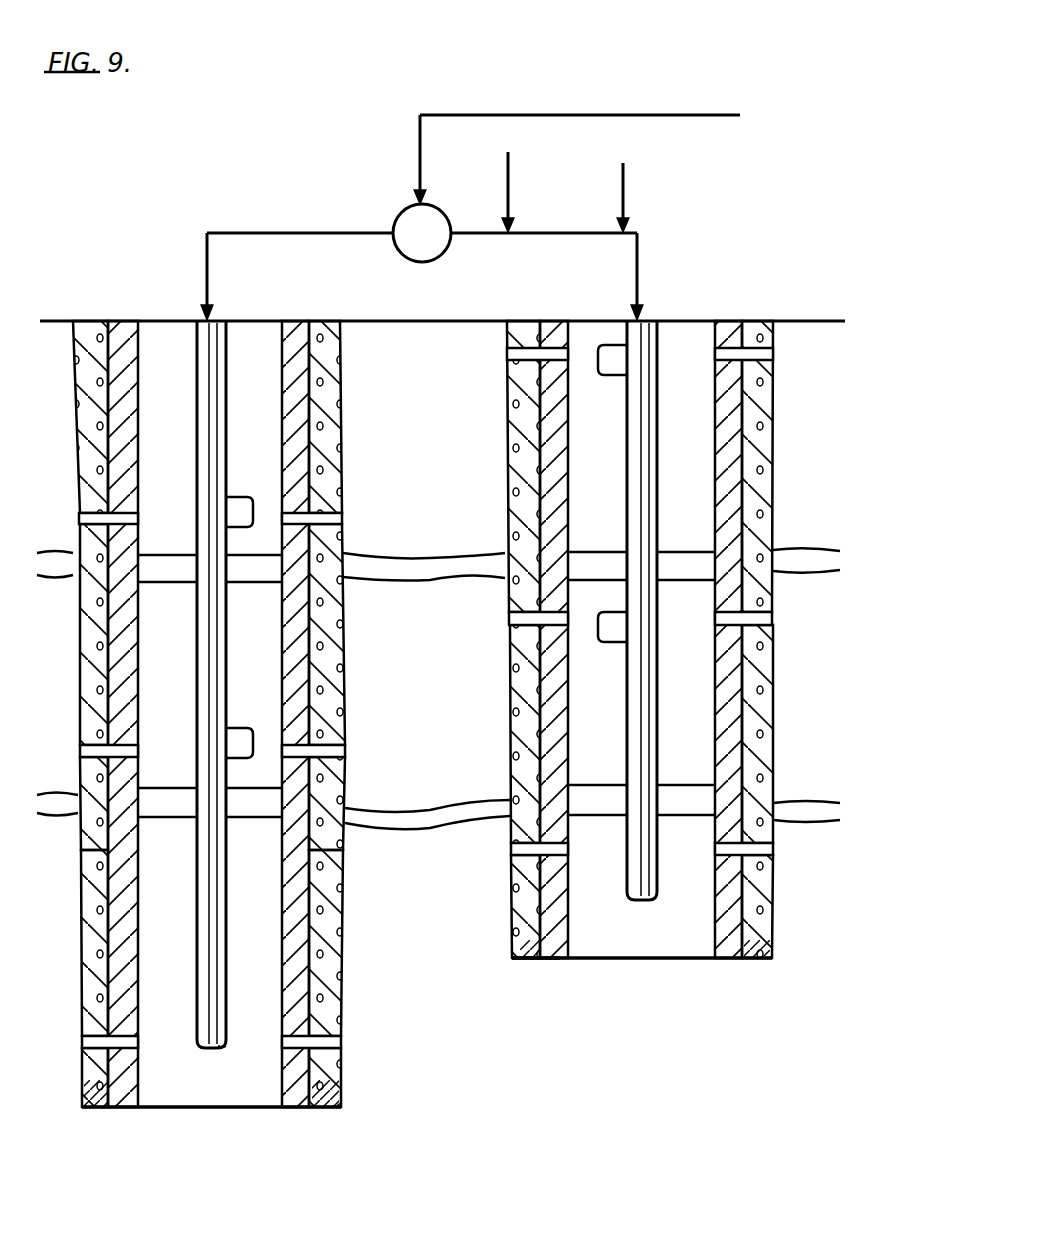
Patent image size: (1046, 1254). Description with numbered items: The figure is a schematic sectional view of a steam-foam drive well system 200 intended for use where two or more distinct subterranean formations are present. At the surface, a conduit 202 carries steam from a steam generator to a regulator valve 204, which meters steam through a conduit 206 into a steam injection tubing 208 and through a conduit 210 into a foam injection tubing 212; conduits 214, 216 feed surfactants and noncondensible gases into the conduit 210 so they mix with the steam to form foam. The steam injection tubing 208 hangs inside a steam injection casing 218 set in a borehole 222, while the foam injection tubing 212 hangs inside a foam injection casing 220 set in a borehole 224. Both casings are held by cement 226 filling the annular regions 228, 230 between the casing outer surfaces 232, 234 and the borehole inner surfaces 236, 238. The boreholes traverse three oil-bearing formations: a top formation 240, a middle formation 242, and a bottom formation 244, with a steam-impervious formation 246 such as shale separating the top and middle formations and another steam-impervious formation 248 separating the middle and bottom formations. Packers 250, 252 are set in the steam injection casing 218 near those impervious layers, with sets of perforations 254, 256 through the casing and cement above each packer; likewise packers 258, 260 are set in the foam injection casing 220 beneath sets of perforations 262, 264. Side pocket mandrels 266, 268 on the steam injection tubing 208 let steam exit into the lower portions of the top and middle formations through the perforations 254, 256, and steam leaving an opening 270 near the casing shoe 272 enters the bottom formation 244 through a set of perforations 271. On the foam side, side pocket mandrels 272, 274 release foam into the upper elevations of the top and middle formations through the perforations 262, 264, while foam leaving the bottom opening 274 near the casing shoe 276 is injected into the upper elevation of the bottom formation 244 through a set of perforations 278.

The steam-foam drive well system 200 is at (256, 162).
The conduit 202 is at (548, 116).
The regulator valve 204 is at (405, 210).
The conduit 206 is at (268, 233).
The steam injection tubing 208 is at (197, 333).
The conduit 210 is at (637, 272).
The foam injection tubing 212 is at (627, 332).
The conduit 214 is at (508, 175).
The conduit 216 is at (623, 190).
The steam injection casing 218 is at (300, 395).
The foam injection casing 220 is at (550, 435).
The borehole 222 is at (343, 490).
The borehole 224 is at (510, 652).
The cement 226 is at (318, 712).
The annular region 228 is at (343, 780).
The annular region 230 is at (520, 866).
The outer surface 232 is at (343, 910).
The outer surface 234 is at (518, 908).
The inner surface 236 is at (340, 1020).
The inner surface 238 is at (770, 928).
The top subterranean oil-bearing formation 240 is at (840, 445).
The middle subterranean oil-bearing formation 242 is at (845, 695).
The bottom subterranean oil-bearing formation 244 is at (540, 1094).
The steam-impervious formation 246 is at (800, 553).
The steam-impervious formation 248 is at (797, 806).
The packer 250 is at (165, 578).
The packer 252 is at (165, 820).
The set of perforations 254 is at (80, 517).
The set of perforations 256 is at (82, 750).
The packer 258 is at (598, 552).
The packer 260 is at (685, 808).
The set of perforations 262 is at (773, 353).
The set of perforations 264 is at (773, 622).
The side pocket mandrel 266 is at (242, 497).
The side pocket mandrel 268 is at (240, 728).
The opening 270 is at (222, 1048).
The set of perforations 271 is at (345, 1045).
The casing shoe 272 is at (85, 1110).
The side pocket mandrel 274 is at (600, 642).
The casing shoe 276 is at (530, 960).
The set of perforations 278 is at (775, 848).